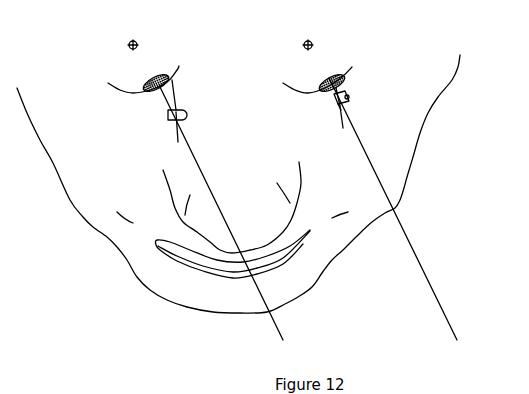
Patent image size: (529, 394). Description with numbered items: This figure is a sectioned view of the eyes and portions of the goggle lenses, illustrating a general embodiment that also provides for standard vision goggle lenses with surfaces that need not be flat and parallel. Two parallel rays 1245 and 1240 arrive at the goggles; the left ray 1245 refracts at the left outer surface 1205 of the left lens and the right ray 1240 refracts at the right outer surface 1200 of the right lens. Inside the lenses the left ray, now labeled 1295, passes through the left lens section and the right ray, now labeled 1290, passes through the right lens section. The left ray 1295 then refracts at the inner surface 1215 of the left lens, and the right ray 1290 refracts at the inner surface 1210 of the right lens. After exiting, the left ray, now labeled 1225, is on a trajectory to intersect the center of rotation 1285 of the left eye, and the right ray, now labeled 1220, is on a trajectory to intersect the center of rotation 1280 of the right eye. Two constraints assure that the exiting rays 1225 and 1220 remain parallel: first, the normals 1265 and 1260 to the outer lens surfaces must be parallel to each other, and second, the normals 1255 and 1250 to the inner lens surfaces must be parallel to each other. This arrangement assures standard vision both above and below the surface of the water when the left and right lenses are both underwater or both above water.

The right outer surface 1200 is at (238, 184).
The left outer surface 1205 is at (404, 128).
The inner surface of the right lens 1210 is at (224, 96).
The inner surface of the left lens 1215 is at (410, 110).
The right exit ray 1220 is at (121, 89).
The left exit ray 1225 is at (297, 108).
The right parallel ray 1240 is at (221, 216).
The left parallel ray 1245 is at (405, 209).
The normal to the right inner lens surface 1250 is at (196, 75).
The normal to the left inner lens surface 1255 is at (369, 75).
The normal to the right outer lens surface 1260 is at (139, 144).
The normal to the left outer lens surface 1265 is at (289, 132).
The center of rotation of the right eye 1280 is at (89, 54).
The center of rotation of the left eye 1285 is at (356, 49).
The right ray within lens 1290 is at (134, 119).
The left ray within lens 1295 is at (272, 121).